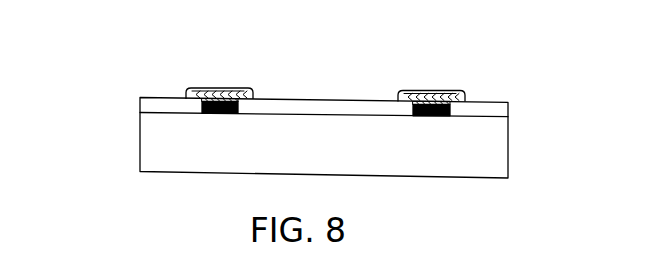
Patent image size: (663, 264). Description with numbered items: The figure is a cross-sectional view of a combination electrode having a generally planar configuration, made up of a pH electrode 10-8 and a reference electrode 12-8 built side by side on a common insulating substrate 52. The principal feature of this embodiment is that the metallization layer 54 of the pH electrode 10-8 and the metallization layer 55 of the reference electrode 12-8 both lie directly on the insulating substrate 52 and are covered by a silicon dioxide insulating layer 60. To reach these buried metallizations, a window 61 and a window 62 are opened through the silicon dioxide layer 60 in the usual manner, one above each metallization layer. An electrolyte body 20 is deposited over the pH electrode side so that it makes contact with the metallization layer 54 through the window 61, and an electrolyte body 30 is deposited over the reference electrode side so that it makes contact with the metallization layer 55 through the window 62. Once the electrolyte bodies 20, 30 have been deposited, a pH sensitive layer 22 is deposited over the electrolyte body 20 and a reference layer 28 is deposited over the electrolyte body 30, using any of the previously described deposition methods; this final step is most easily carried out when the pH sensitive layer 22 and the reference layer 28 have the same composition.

The pH electrode 10-8 is at (220, 80).
The reference electrode 12-8 is at (432, 84).
The electrolyte body 20 is at (200, 92).
The pH sensitive layer 22 is at (240, 90).
The reference layer 28 is at (460, 92).
The electrolyte body 30 is at (420, 93).
The insulating substrate 52 is at (477, 178).
The metallization layer 54 is at (208, 114).
The metallization layer 55 is at (417, 117).
The silicon dioxide insulating layer 60 is at (147, 98).
The window 61 is at (195, 101).
The window 62 is at (453, 105).